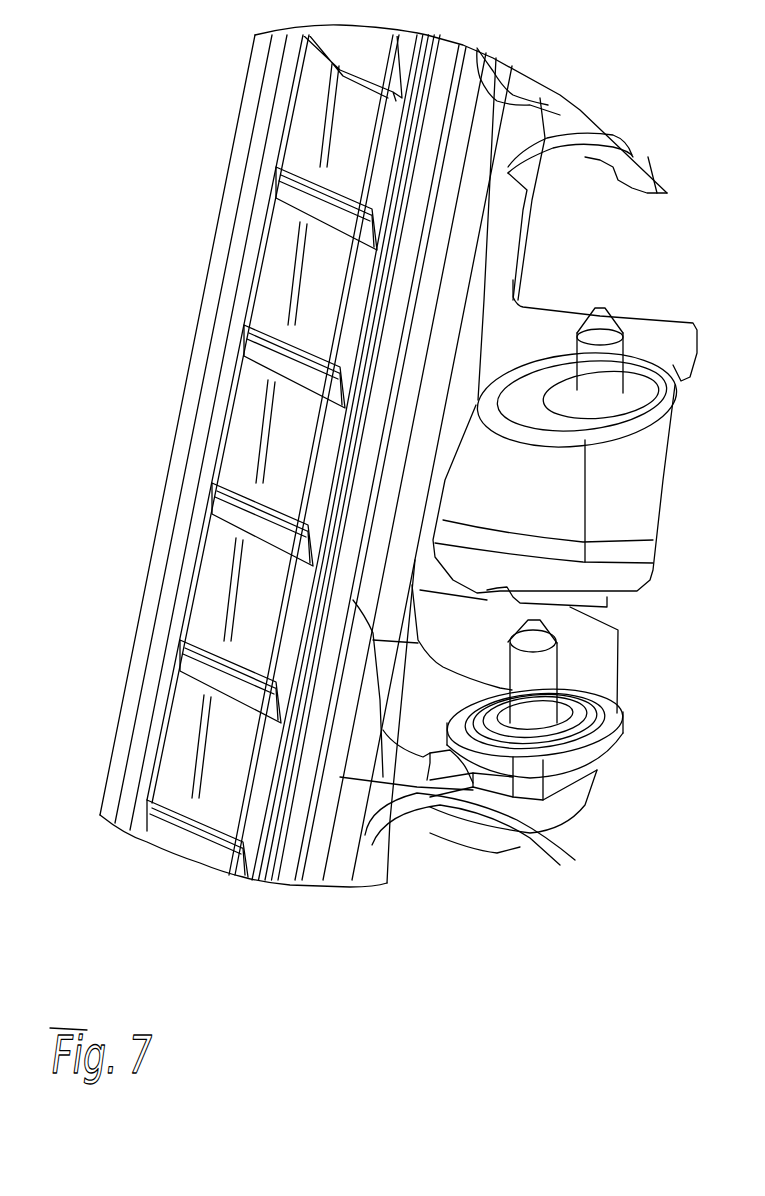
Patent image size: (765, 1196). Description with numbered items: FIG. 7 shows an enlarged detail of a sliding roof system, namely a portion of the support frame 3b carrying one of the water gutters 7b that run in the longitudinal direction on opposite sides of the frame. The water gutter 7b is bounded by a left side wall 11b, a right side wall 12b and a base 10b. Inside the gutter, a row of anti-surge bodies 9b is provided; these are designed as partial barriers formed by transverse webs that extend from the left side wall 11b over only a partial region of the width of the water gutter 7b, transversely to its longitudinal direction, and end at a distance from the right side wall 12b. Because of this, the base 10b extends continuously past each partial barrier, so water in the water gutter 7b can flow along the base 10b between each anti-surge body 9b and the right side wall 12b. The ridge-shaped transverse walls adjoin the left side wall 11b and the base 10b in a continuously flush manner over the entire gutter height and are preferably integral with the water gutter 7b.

The support frame 3b is at (332, 895).
The water gutter 7b is at (185, 750).
The anti-surge body 9b is at (273, 205).
The base 10b is at (278, 885).
The left side wall 11b is at (182, 722).
The right side wall 12b is at (345, 478).